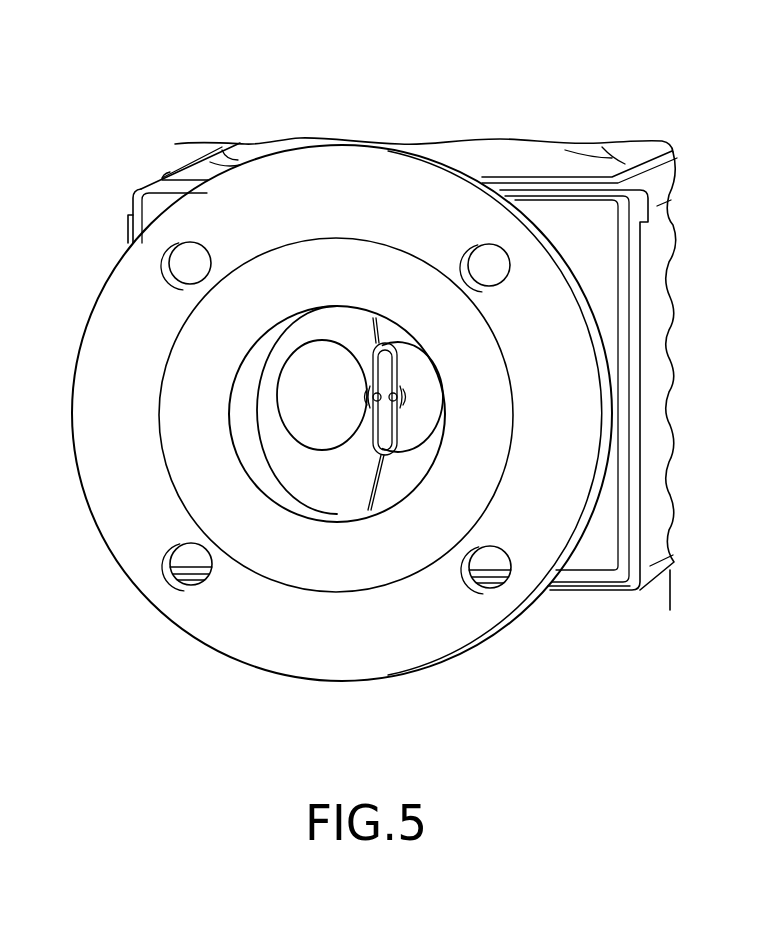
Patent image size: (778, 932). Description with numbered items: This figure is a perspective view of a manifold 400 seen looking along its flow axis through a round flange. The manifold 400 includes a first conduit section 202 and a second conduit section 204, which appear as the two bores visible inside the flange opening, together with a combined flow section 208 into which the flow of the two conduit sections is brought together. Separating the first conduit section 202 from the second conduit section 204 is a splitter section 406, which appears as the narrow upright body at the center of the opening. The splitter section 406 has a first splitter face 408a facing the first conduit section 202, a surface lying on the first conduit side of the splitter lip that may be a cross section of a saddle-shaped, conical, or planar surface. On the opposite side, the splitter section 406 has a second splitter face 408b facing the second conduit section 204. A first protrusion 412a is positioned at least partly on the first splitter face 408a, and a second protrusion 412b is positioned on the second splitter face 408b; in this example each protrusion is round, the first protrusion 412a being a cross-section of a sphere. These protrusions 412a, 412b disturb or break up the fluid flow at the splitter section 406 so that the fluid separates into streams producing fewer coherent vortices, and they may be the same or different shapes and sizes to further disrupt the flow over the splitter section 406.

The manifold 400 is at (158, 84).
The first conduit section 202 is at (323, 372).
The second conduit section 204 is at (423, 370).
The combined flow section 208 is at (339, 466).
The splitter section 406 is at (373, 347).
The first splitter face 408a is at (377, 380).
The second splitter face 408b is at (397, 425).
The first protrusion 412a is at (375, 398).
The second protrusion 412b is at (398, 397).